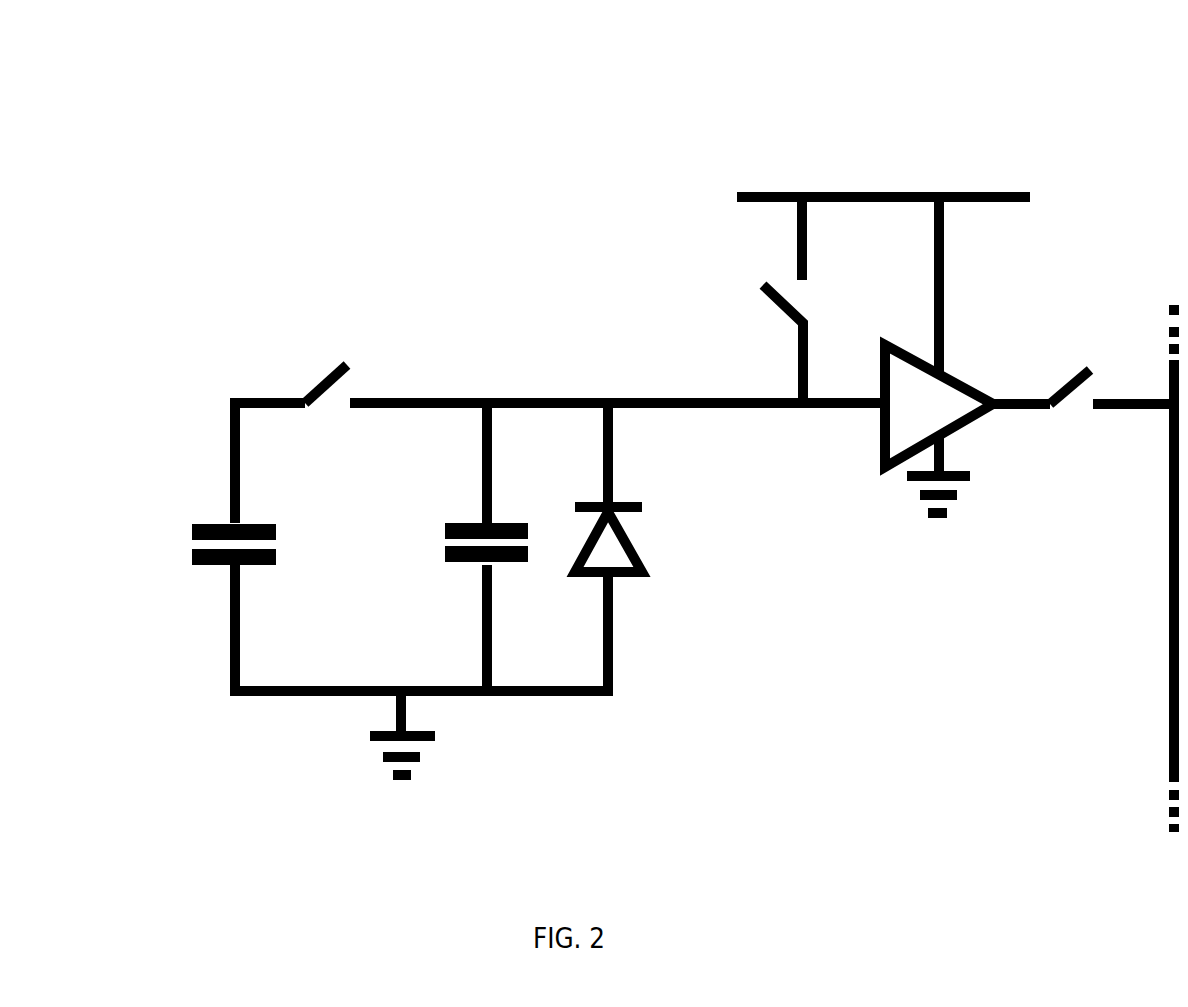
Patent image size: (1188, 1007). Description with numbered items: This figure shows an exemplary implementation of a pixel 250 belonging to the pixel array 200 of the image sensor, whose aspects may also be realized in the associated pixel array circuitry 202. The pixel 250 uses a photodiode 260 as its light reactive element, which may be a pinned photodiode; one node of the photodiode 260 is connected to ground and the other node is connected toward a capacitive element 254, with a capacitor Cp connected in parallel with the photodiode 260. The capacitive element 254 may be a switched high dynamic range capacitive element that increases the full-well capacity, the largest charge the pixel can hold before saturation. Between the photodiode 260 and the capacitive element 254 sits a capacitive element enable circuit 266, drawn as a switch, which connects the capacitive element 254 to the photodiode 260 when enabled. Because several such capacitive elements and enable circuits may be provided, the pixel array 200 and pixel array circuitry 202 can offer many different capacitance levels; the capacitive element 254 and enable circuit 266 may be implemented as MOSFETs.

The pixel array 200 is at (763, 99).
The pixel array circuitry 202 is at (1005, 442).
The pixel 250 is at (158, 88).
The capacitive element 254 is at (210, 474).
The photodiode 260 is at (652, 574).
The capacitive element enable circuit 266 is at (343, 396).